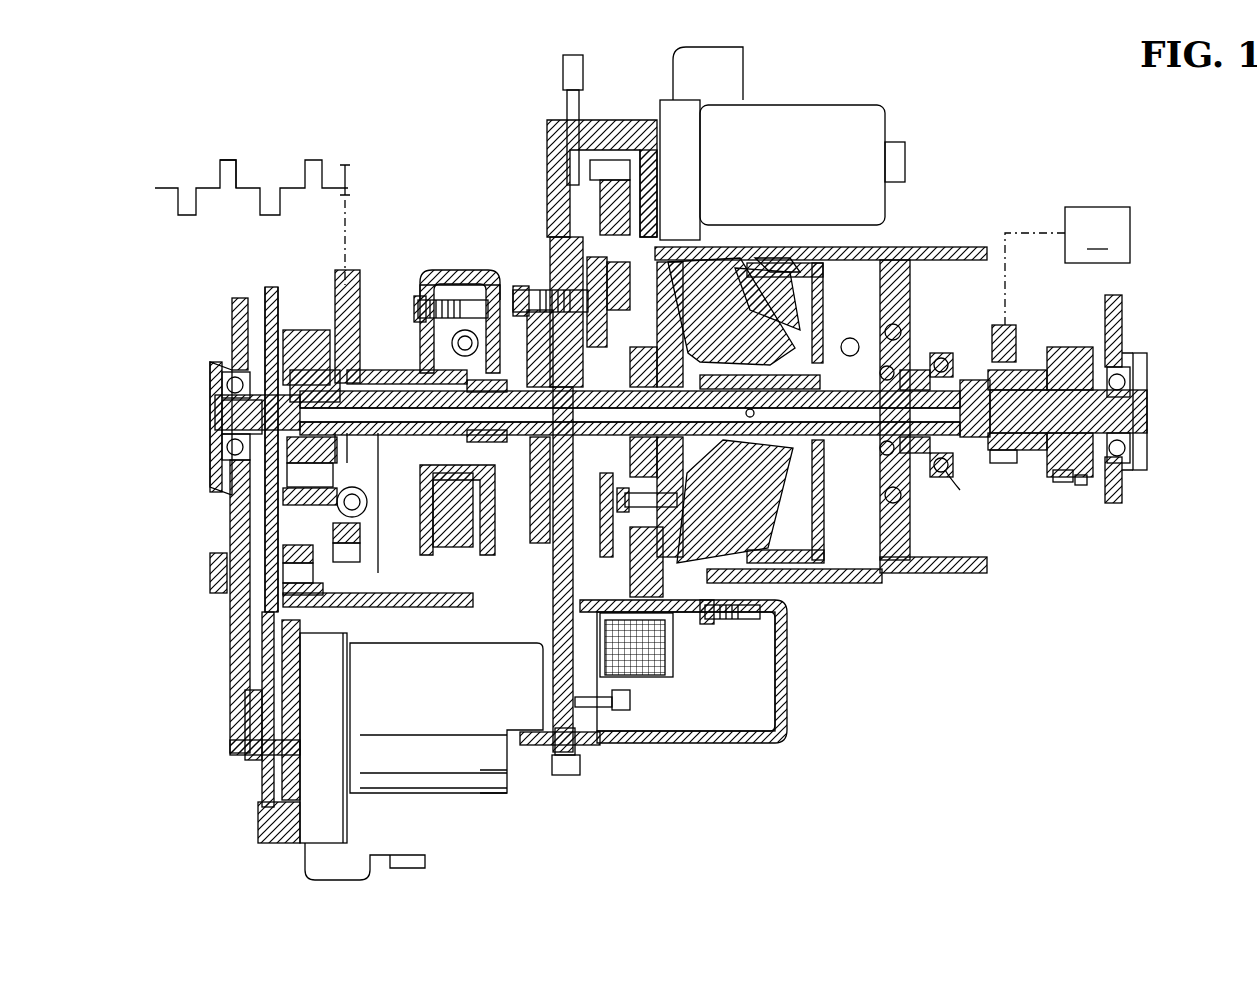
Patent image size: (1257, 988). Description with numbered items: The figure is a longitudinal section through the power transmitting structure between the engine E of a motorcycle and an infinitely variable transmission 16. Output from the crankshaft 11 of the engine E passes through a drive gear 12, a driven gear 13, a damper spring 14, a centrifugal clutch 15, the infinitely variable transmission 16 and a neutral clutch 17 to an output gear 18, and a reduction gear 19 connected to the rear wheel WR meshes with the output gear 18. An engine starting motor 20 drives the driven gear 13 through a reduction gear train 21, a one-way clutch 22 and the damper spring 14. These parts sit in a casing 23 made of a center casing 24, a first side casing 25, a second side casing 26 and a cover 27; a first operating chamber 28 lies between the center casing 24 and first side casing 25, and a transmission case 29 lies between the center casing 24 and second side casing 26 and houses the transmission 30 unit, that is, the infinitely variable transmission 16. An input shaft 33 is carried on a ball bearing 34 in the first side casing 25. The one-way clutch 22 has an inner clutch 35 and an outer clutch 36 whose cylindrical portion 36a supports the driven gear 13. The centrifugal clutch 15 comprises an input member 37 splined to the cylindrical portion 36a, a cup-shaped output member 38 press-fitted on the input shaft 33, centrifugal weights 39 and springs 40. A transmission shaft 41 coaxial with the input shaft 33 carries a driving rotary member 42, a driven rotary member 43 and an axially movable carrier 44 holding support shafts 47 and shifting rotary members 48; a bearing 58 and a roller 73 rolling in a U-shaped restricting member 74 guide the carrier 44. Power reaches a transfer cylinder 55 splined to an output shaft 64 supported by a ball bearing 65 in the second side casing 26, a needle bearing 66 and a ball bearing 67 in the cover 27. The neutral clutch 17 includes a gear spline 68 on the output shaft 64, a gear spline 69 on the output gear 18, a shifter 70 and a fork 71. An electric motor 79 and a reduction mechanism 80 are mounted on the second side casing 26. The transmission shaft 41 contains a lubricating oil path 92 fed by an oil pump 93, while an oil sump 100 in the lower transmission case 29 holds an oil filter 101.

The engine E is at (196, 178).
The crankshaft 11 is at (260, 188).
The drive gear 12 is at (350, 178).
The driven gear 13 is at (355, 275).
The damper spring 14 is at (340, 500).
The centrifugal clutch 15 is at (450, 282).
The infinitely variable transmission 16 is at (823, 265).
The neutral clutch 17 is at (1055, 345).
The output gear 18 is at (1000, 463).
The reduction gear 19 is at (1008, 323).
The engine starting motor 20 is at (452, 720).
The reduction gear train 21 is at (248, 332).
The one-way clutch 22 is at (312, 325).
The casing 23 is at (715, 755).
The center casing 24 is at (558, 765).
The first side casing 25 is at (262, 640).
The second side casing 26 is at (890, 578).
The cover 27 is at (1145, 400).
The first operating chamber 28 is at (503, 622).
The transmission case 29 is at (855, 583).
The transmission 30 is at (983, 305).
The input shaft 33 is at (375, 368).
The ball bearing 34 is at (232, 460).
The inner clutch 35 is at (226, 385).
The outer clutch 36 is at (292, 340).
The cylindrical portion 36a is at (372, 520).
The input member 37 is at (428, 500).
The output member 38 is at (480, 283).
The centrifugal weights 39 is at (455, 550).
The springs 40 is at (430, 300).
The transmission shaft 41 is at (822, 500).
The driving rotary member 42 is at (765, 465).
The driven rotary member 43 is at (775, 258).
The carrier 44 is at (660, 245).
The support shafts 47 is at (745, 268).
The shifting rotary members 48 is at (740, 300).
The transfer cylinder 55 is at (935, 478).
The bearing 58 is at (855, 330).
The output shaft 64 is at (1030, 435).
The ball bearing 65 is at (905, 380).
The needle bearing 66 is at (950, 478).
The ball bearing 67 is at (1125, 460).
The gear spline 68 is at (1085, 365).
The gear spline 69 is at (1035, 377).
The shifter 70 is at (1060, 478).
The fork 71 is at (1080, 485).
The roller 73 is at (680, 630).
The restricting member 74 is at (722, 625).
The electric motor 79 is at (772, 163).
The reduction mechanism 80 is at (580, 215).
The lubricating oil path 92 is at (795, 408).
The oil pump 93 is at (527, 505).
The oil sump 100 is at (770, 700).
The oil filter 101 is at (660, 680).
The rear wheel WR is at (1097, 235).